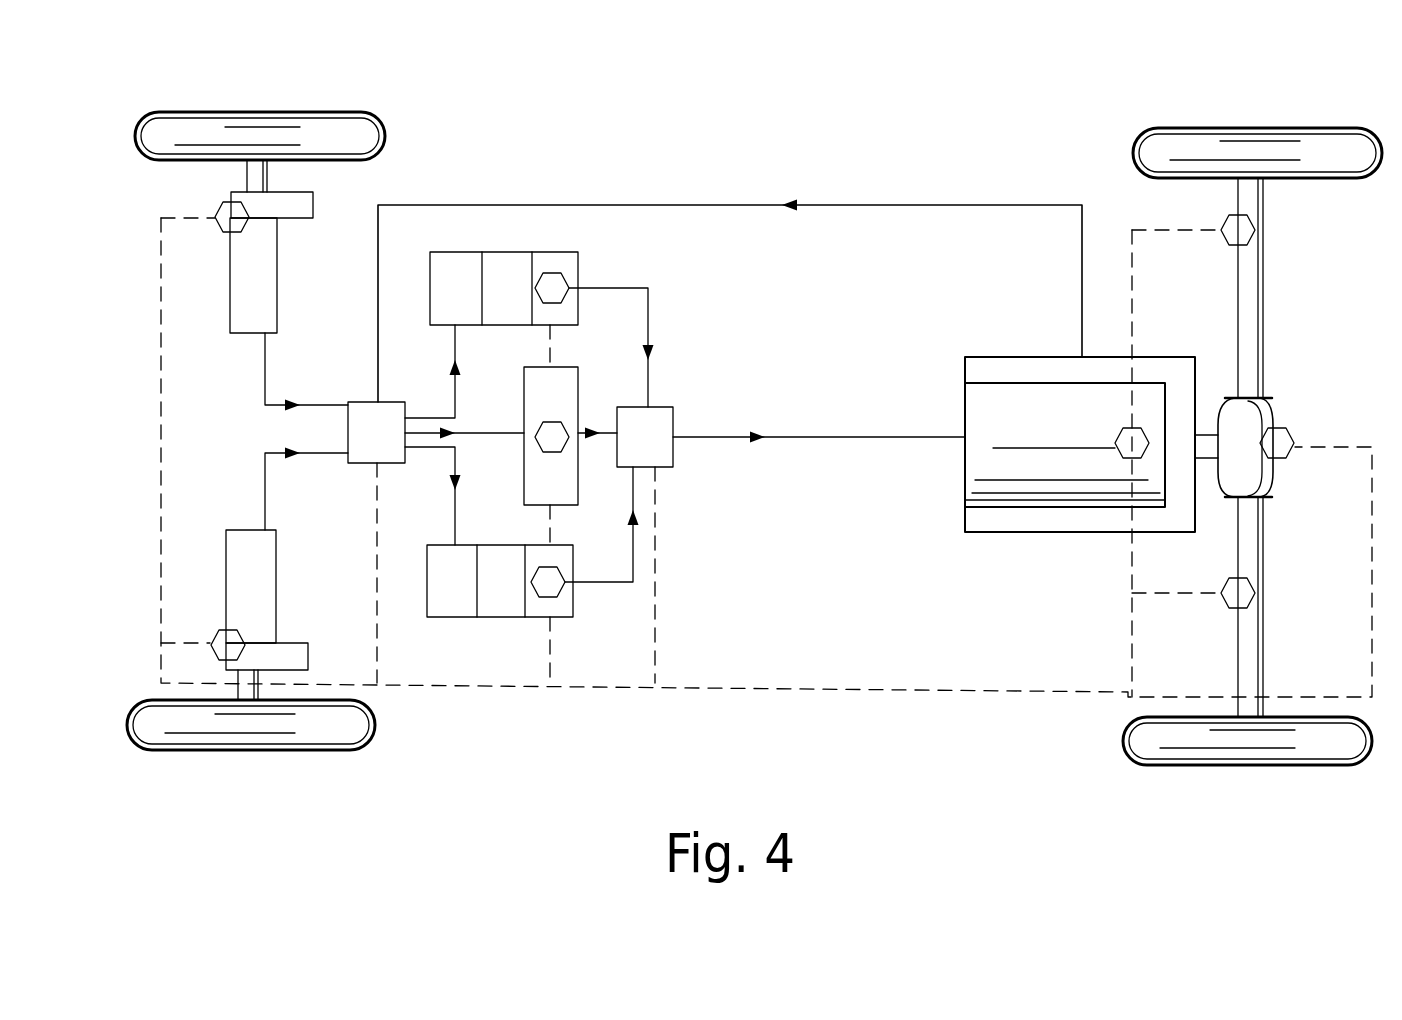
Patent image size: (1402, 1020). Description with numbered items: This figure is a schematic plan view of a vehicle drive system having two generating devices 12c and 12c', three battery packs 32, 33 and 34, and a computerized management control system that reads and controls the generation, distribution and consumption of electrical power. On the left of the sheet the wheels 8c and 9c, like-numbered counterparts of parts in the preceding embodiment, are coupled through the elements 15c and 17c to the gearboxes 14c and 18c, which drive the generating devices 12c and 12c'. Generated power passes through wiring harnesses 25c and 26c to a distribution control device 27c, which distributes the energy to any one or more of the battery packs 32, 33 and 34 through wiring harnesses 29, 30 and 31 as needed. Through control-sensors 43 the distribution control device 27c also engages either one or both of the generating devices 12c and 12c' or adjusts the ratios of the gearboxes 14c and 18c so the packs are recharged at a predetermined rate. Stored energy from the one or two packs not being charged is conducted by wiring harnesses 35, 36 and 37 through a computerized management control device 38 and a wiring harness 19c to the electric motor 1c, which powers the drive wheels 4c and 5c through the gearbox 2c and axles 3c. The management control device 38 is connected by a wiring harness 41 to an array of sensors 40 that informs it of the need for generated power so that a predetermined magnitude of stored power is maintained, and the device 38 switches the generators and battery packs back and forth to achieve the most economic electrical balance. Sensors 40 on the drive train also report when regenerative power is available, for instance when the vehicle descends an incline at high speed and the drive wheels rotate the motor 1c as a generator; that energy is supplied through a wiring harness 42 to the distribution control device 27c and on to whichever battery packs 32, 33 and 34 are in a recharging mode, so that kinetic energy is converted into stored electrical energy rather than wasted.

The electric motor 1c is at (1060, 405).
The gearbox 2c is at (1265, 412).
The axles 3c is at (1252, 302).
The drive wheel 4c is at (1283, 150).
The drive wheel 5c is at (1272, 745).
The front wheel 8c is at (332, 128).
The front wheel 9c is at (333, 723).
The generating device 12c is at (199, 285).
The generating device 12c' is at (198, 573).
The gearbox 14c is at (252, 196).
The wheel axle 15c is at (247, 176).
The wheel axle 17c is at (245, 690).
The gearbox 18c is at (257, 660).
The wiring harness 19c is at (845, 422).
The wiring harness 25c is at (240, 404).
The wiring harness 26c is at (240, 470).
The distribution control device 27c is at (378, 402).
The wiring harness 29 is at (455, 372).
The wiring harness 30 is at (475, 433).
The wiring harness 31 is at (455, 488).
The battery pack 32 is at (440, 270).
The battery pack 33 is at (565, 388).
The battery pack 34 is at (495, 602).
The wiring harness 35 is at (600, 438).
The wiring harness 36 is at (648, 322).
The wiring harness 37 is at (608, 580).
The computerized management control device 38 is at (663, 453).
The sensors 40 is at (560, 290).
The wiring harness 41 is at (161, 380).
The wiring harness 42 is at (862, 190).
The control-sensors 43 is at (240, 226).